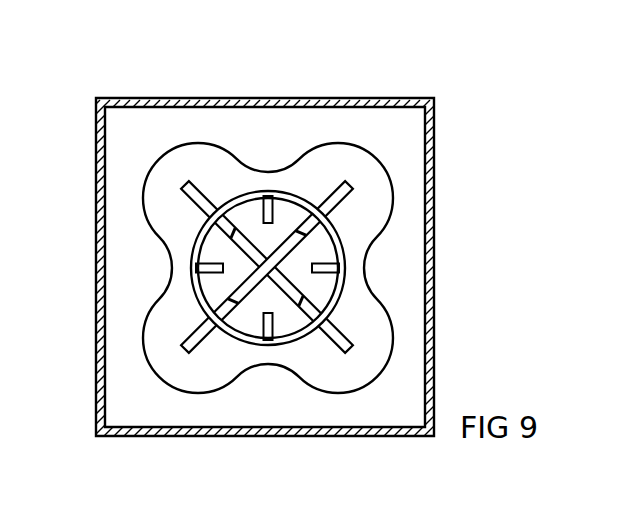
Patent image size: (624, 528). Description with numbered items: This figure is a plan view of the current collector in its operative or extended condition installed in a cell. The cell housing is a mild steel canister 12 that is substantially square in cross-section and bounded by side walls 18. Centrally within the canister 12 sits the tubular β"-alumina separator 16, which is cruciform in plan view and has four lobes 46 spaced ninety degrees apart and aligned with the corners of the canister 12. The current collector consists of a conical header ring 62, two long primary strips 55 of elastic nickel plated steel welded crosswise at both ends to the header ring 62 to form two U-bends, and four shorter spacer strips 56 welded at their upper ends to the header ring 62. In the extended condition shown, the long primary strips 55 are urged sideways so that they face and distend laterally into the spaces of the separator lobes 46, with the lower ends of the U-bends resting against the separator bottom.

The canister 12 is at (415, 92).
The separator 16 is at (367, 250).
The side walls 18 is at (433, 333).
The lobes 46 is at (146, 161).
The primary strips 55 is at (182, 182).
The spacer strips 56 is at (268, 196).
The header ring 62 is at (197, 299).